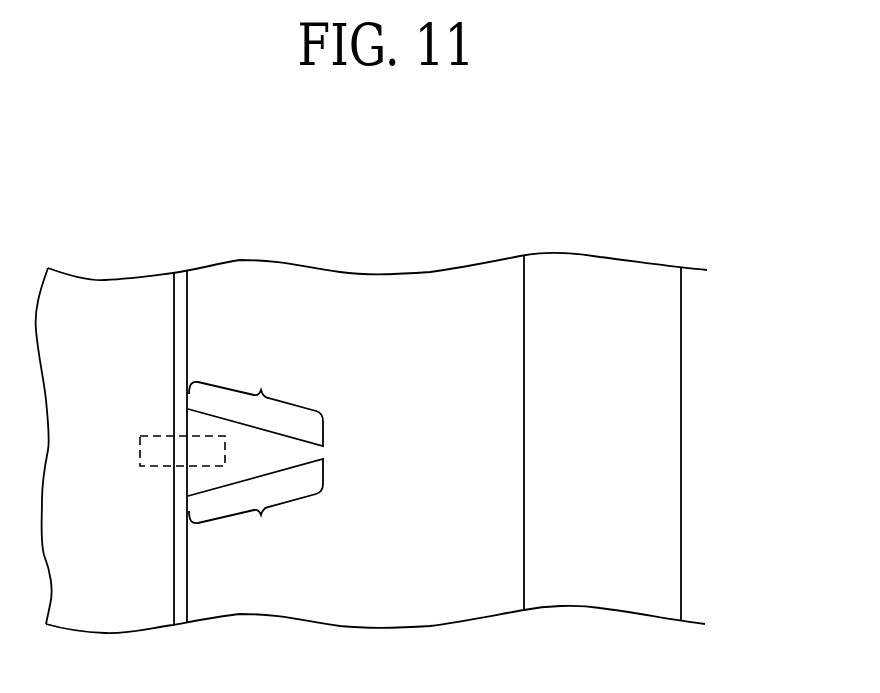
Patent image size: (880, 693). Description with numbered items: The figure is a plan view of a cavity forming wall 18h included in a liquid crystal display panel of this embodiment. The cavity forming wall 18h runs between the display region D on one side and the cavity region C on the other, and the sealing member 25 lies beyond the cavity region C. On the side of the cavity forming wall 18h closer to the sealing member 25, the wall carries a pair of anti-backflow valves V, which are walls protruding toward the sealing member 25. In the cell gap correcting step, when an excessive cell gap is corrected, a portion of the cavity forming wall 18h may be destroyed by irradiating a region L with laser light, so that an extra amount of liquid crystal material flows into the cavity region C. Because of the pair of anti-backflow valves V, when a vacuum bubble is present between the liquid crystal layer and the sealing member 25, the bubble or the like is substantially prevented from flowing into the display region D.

The cavity forming wall 18h is at (183, 277).
The sealing member 25 is at (662, 440).
The display region D is at (96, 379).
The cavity region C is at (450, 454).
The region irradiated with laser light L is at (153, 467).
The anti-backflow valves V is at (255, 453).